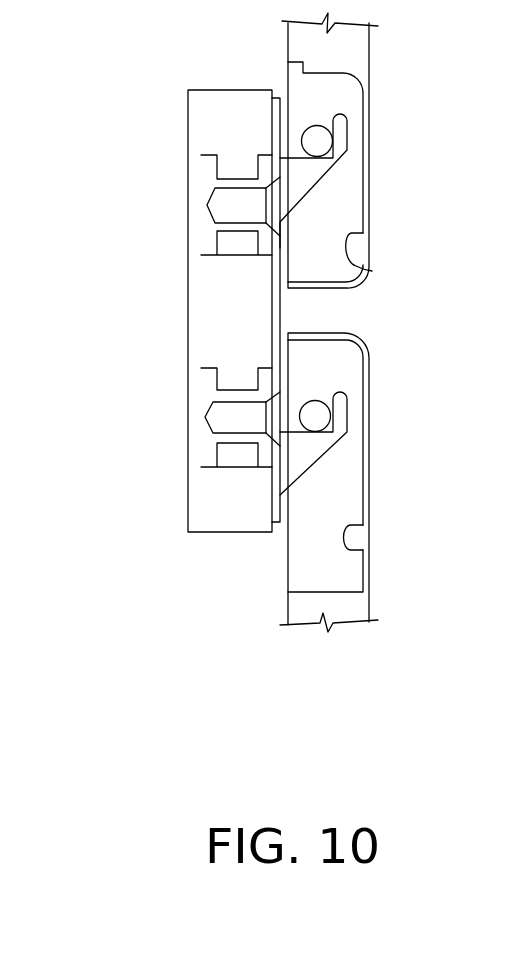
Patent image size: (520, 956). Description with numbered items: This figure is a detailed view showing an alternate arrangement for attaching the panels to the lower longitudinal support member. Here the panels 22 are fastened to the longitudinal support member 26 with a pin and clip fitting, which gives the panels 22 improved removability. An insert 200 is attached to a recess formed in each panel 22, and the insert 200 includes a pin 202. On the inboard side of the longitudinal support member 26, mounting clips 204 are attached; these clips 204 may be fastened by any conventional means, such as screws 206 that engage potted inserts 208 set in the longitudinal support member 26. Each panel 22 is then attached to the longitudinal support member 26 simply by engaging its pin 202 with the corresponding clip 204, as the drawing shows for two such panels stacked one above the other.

The panel 22 is at (370, 132).
The insert 200 is at (372, 271).
The pin 202 is at (317, 126).
The mounting clip 204 is at (307, 182).
The screw 206 is at (232, 212).
The potted insert 208 is at (236, 388).
The longitudinal support member 26 is at (213, 497).